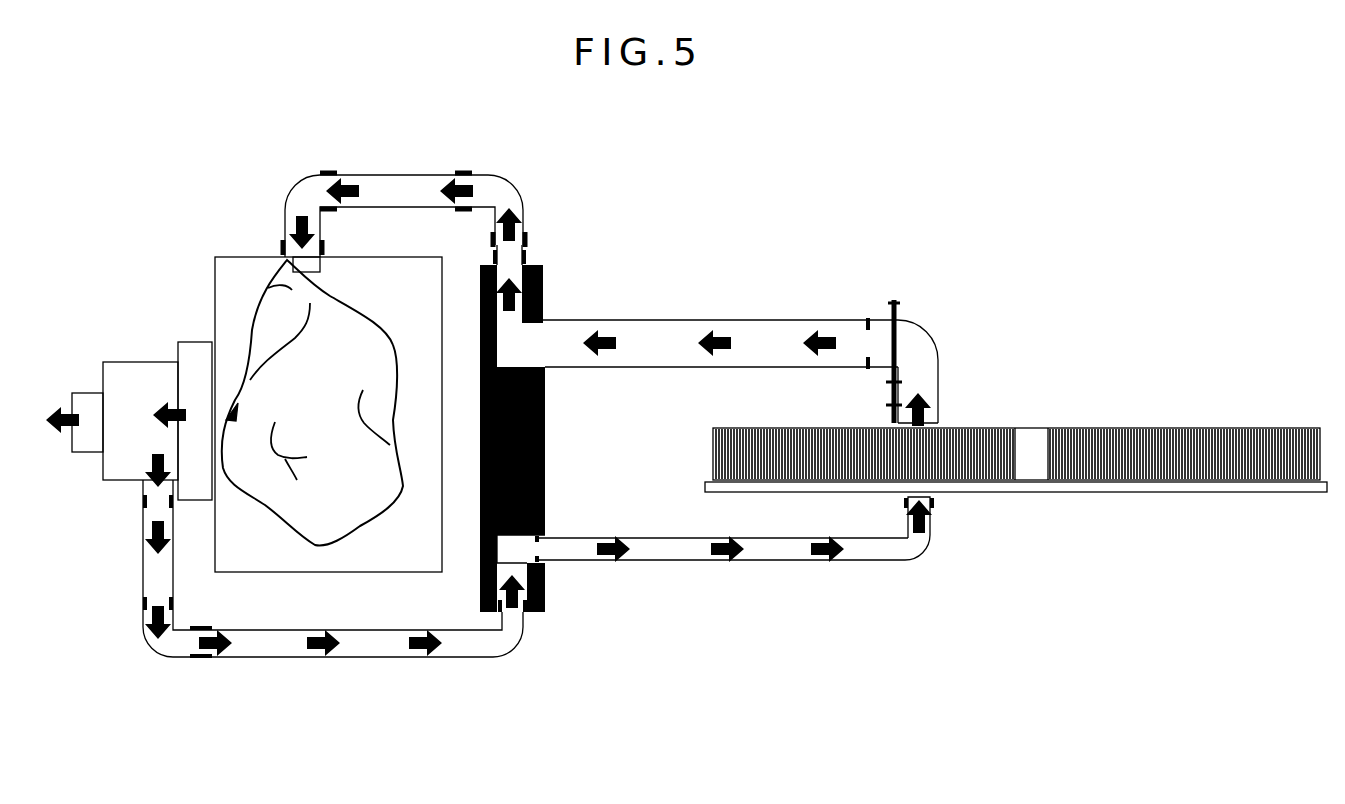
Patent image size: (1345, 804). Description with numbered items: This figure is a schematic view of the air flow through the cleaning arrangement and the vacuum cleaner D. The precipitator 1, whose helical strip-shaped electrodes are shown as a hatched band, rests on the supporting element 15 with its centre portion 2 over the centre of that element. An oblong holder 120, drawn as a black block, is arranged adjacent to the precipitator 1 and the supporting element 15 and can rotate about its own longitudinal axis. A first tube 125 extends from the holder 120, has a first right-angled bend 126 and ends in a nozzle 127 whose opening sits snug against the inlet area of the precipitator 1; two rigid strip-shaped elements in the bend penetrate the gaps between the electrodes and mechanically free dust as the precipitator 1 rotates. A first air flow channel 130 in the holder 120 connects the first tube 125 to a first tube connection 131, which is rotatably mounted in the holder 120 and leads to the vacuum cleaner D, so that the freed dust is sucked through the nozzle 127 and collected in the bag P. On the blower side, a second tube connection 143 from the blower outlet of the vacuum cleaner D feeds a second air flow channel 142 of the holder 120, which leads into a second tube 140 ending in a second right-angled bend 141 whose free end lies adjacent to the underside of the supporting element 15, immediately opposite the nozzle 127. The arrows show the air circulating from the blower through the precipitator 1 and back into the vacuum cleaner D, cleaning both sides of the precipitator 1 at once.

The vacuum cleaner D is at (242, 253).
The bag P is at (357, 337).
The precipitator 1 is at (1105, 428).
The centre portion 2 is at (1030, 445).
The supporting element 15 is at (1203, 490).
The holder 120 is at (548, 460).
The first tube 125 is at (677, 320).
The first right-angled bend 126 is at (940, 365).
The nozzle 127 is at (943, 425).
The first air flow channel 130 is at (512, 350).
The first tube connection 131 is at (527, 195).
The second tube 140 is at (687, 560).
The second right-angled bend 141 is at (935, 543).
The second air flow channel 142 is at (515, 550).
The second tube connection 143 is at (482, 652).